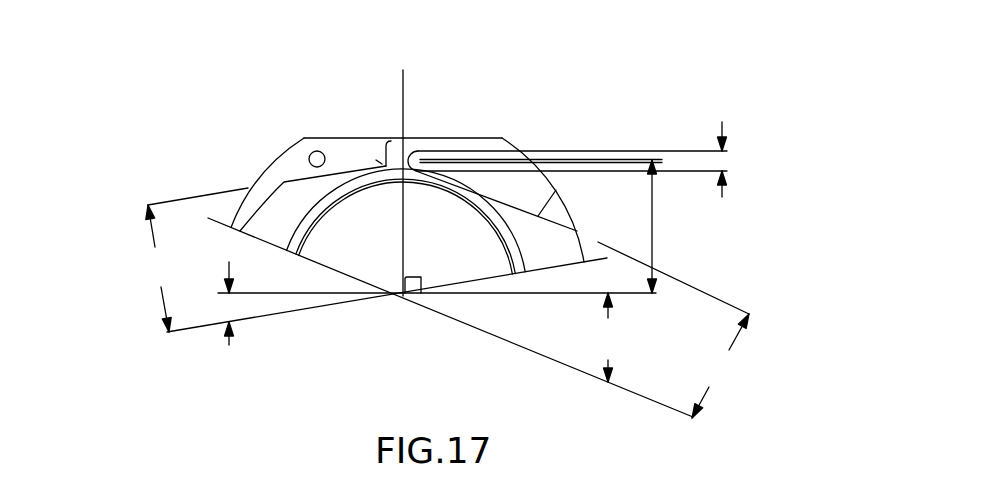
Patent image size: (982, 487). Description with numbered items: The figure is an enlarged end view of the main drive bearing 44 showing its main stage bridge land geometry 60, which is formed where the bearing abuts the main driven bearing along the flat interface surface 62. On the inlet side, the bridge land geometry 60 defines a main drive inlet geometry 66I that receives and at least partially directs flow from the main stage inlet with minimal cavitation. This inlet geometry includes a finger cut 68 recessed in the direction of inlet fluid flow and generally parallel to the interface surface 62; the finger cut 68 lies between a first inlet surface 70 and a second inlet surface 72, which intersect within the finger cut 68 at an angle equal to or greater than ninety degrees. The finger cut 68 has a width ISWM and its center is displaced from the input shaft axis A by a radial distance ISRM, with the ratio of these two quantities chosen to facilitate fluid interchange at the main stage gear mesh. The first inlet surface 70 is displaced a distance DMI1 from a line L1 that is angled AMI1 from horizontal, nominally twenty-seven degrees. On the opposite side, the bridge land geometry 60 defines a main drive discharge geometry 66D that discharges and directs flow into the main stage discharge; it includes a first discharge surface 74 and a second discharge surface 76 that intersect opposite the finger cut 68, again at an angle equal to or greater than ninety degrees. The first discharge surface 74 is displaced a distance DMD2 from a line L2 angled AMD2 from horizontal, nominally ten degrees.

The main stage bridge land geometry 60 is at (422, 89).
The interface surface 62 is at (301, 138).
The finger cut 68 is at (391, 141).
The first inlet surface 70 is at (558, 190).
The second inlet surface 72 is at (433, 150).
The first discharge surface 74 is at (273, 170).
The second discharge surface 76 is at (376, 160).
The main drive bearing 44 is at (355, 251).
The main drive discharge geometry 66D is at (120, 173).
The main drive inlet geometry 66I is at (740, 204).
The input shaft axis A is at (403, 296).
The line L1 is at (636, 396).
The line L2 is at (195, 330).
The distance DM_D2 DMD2 is at (154, 268).
The angle AM_D2 AMD2 is at (236, 348).
The angle AM_I1 AMI1 is at (599, 337).
The distance DM_I1 DMI1 is at (718, 366).
The radial distance ISR_M ISRM is at (659, 226).
The width ISW_M ISWM is at (722, 162).